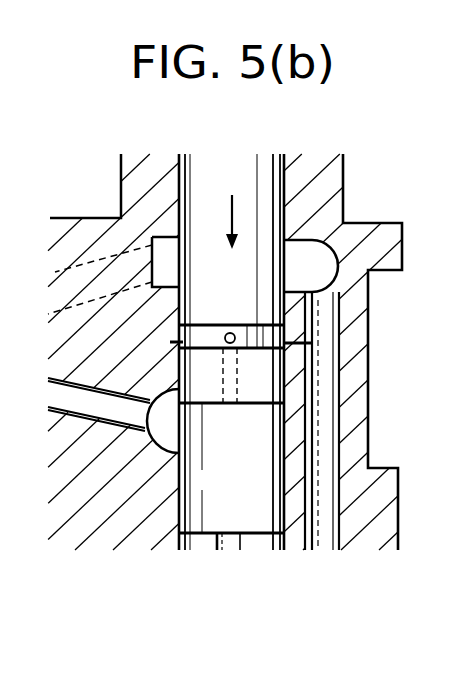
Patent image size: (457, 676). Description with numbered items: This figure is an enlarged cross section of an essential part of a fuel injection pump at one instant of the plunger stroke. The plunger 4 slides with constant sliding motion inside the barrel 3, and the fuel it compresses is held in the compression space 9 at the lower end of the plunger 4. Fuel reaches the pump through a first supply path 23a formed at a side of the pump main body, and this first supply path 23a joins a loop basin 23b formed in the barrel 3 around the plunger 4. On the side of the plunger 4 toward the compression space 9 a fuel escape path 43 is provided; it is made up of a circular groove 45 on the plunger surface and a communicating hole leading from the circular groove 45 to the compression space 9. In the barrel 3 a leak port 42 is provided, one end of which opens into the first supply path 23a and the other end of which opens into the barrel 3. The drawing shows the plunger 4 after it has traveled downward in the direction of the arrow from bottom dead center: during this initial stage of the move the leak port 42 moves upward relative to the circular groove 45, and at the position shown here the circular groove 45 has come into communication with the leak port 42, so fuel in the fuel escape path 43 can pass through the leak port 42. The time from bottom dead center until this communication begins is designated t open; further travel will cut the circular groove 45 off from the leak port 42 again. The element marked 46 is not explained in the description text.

The plunger 4 is at (261, 178).
The loop basin 23b is at (350, 222).
The first supply path 23a is at (333, 398).
The leak port 42 is at (312, 343).
The circular groove 45 is at (179, 334).
The fuel escape path 43 is at (178, 343).
The passage 46 is at (232, 376).
The barrel 3 is at (280, 455).
The compression space 9 is at (206, 530).